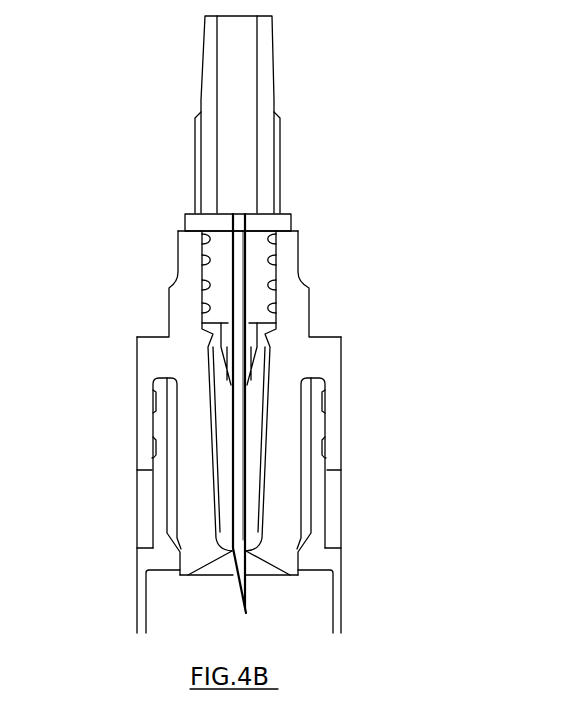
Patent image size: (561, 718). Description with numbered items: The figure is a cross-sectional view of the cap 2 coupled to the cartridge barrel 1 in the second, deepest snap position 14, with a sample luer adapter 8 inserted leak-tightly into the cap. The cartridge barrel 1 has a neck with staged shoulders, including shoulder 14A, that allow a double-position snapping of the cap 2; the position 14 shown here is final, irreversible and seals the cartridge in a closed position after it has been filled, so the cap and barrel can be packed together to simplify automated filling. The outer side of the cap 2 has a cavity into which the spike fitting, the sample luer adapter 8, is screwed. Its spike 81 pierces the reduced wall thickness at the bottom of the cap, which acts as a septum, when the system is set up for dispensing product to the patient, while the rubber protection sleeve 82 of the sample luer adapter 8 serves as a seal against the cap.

The sample luer adapter 8 is at (271, 49).
The cap 2 is at (297, 253).
The shoulder 14A is at (327, 426).
The second snap position 14 is at (323, 456).
The rubber protection sleeve 82 is at (217, 499).
The spike 81 is at (245, 528).
The cartridge barrel 1 is at (341, 604).